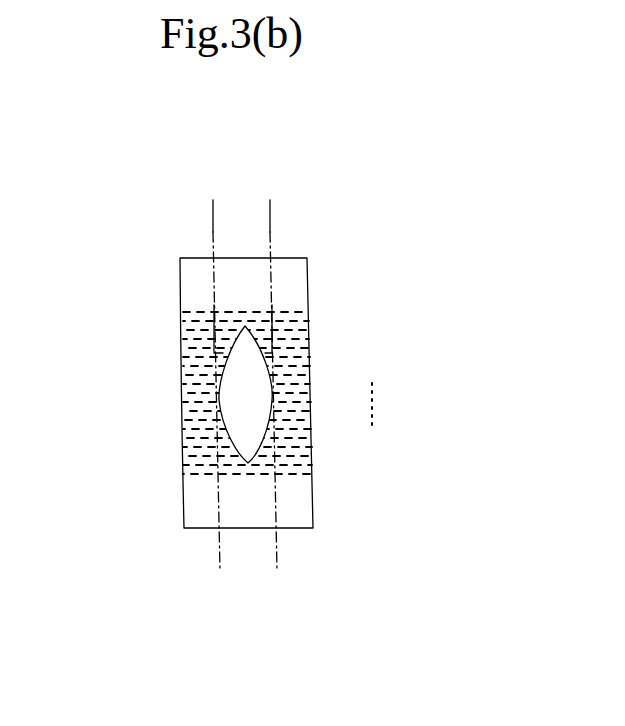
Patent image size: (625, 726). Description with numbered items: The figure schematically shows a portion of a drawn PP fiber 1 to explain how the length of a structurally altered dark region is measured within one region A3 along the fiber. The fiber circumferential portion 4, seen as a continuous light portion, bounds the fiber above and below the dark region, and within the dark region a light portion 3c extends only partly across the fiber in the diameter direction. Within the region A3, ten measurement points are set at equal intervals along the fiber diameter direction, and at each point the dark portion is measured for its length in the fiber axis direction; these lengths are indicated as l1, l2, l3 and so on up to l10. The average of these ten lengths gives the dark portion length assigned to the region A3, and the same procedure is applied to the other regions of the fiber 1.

The PP fiber 1 is at (310, 220).
The light portion extending partly in the structurally altered region 3c is at (240, 397).
The fiber circumferential portion 4 is at (192, 276).
The region A3 is at (270, 215).
The length l1 is at (143, 305).
The length l2 is at (143, 323).
The length l3 is at (143, 341).
The length l10 is at (145, 482).